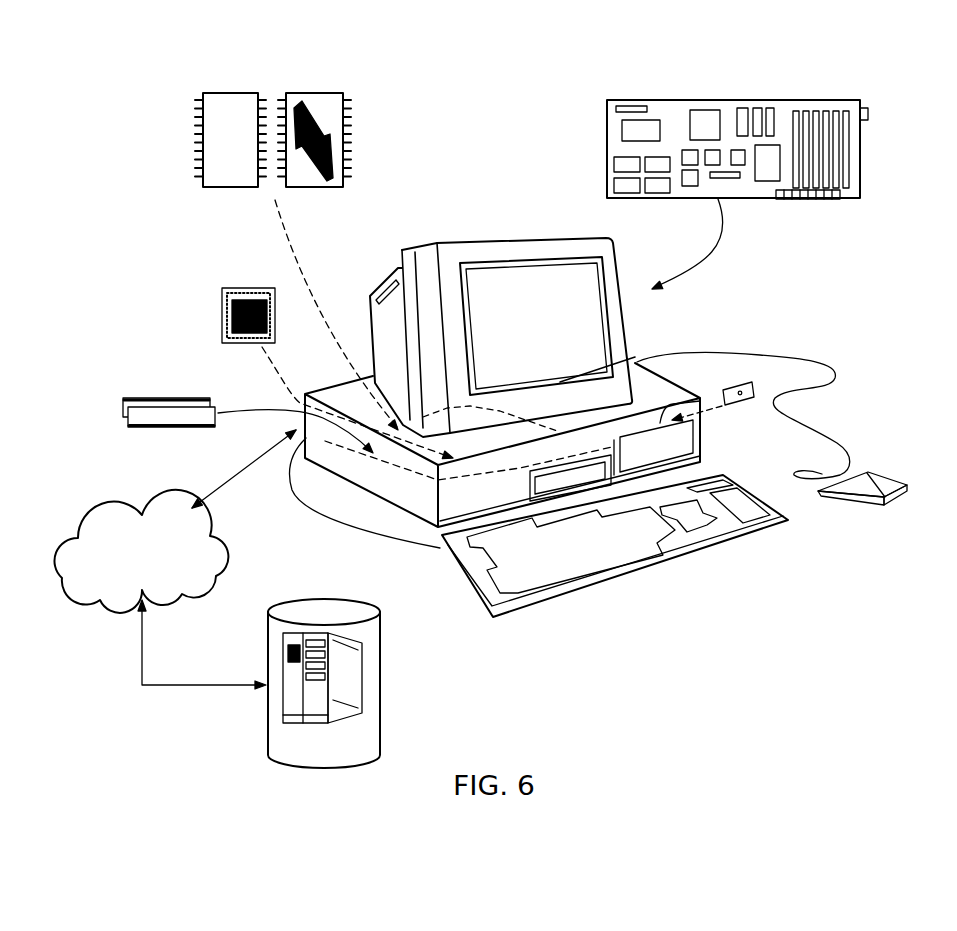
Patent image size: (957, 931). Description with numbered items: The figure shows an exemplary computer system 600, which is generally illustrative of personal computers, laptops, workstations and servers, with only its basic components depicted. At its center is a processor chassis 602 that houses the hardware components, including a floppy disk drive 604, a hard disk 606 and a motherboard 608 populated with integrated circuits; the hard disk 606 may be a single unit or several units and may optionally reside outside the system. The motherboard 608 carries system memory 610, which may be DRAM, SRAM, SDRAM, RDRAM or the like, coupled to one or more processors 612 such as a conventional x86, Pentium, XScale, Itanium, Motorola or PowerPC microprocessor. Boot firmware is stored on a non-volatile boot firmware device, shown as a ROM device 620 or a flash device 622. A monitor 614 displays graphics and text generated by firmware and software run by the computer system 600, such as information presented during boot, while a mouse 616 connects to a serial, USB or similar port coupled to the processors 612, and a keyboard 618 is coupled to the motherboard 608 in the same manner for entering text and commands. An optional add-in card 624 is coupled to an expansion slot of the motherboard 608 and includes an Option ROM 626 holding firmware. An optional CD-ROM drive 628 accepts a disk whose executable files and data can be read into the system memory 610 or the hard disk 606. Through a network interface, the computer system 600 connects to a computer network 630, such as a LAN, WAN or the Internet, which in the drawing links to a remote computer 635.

The computer system 600 is at (600, 663).
The processor chassis 602 is at (718, 406).
The floppy disk drive 604 is at (696, 403).
The hard disk 606 is at (700, 448).
The motherboard 608 is at (392, 472).
The system memory 610 is at (148, 403).
The processor 612 is at (273, 330).
The monitor 614 is at (620, 295).
The mouse 616 is at (885, 505).
The keyboard 618 is at (693, 560).
The ROM device 620 is at (230, 177).
The flash device 622 is at (318, 177).
The add-in card 624 is at (858, 145).
The Option ROM 626 is at (625, 130).
The CD-ROM drive 628 is at (528, 488).
The computer network 630 is at (173, 588).
The remote computer 635 is at (380, 650).